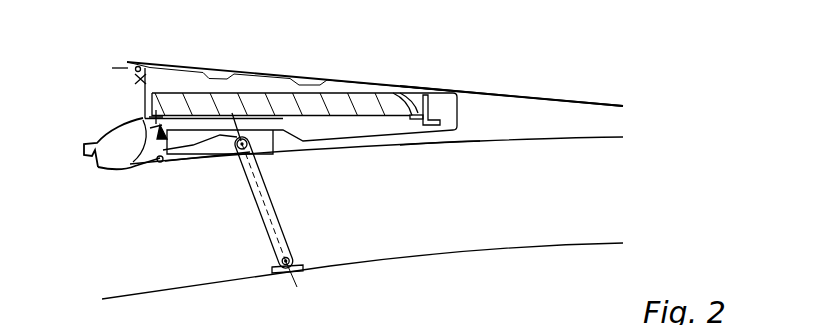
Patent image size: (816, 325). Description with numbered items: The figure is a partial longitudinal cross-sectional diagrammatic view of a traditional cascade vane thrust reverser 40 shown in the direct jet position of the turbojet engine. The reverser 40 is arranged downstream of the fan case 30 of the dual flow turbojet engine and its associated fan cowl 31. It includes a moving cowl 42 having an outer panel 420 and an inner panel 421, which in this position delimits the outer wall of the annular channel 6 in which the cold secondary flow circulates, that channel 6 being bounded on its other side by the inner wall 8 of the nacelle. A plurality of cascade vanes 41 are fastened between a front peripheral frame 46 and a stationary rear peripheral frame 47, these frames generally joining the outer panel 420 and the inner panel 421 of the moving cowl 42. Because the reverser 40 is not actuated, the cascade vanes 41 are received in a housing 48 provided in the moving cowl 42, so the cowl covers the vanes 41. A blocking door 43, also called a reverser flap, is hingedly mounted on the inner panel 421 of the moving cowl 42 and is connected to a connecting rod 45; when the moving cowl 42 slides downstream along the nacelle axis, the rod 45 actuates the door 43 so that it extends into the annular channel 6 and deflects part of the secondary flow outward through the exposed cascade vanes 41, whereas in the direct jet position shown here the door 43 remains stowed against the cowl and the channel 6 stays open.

The annular channel 6 is at (452, 233).
The inner wall 8 is at (162, 289).
The fan case 30 is at (118, 67).
The fan cowl 31 is at (104, 137).
The cascade vane thrust reverser 40 is at (560, 72).
The cascade vanes 41 is at (252, 103).
The moving cowl 42 is at (512, 115).
The blocking door 43 is at (200, 158).
The connecting rod 45 is at (280, 220).
The front peripheral frame 46 is at (143, 103).
The stationary rear peripheral frame 47 is at (440, 97).
The housing 48 is at (348, 125).
The outer panel 420 is at (578, 101).
The inner panel 421 is at (488, 140).